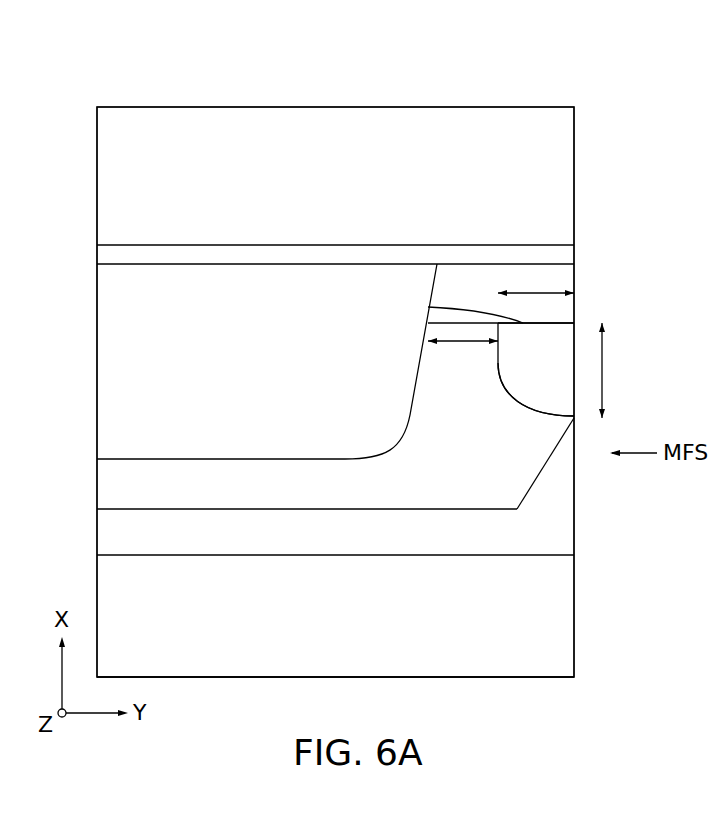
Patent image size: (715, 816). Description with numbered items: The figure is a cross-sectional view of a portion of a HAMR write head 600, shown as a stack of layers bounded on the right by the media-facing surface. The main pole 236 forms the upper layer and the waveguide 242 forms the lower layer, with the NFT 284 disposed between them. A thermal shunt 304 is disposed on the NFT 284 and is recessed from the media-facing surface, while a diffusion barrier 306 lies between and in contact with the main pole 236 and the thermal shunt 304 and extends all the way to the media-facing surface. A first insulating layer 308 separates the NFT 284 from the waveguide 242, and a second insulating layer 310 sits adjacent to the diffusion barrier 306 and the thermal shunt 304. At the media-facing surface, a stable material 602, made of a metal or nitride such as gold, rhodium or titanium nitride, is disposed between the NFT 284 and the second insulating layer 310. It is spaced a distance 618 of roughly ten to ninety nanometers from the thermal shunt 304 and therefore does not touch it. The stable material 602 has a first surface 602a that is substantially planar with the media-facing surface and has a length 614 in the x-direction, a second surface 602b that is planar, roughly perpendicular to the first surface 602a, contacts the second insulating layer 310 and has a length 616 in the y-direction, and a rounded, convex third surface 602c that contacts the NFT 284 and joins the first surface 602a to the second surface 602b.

The HAMR write head 600 is at (142, 72).
The main pole 236 is at (357, 218).
The diffusion barrier 306 is at (562, 255).
The thermal shunt 304 is at (239, 353).
The second insulating layer 310 is at (494, 293).
The stable material 602 is at (559, 373).
The first surface 602a is at (575, 335).
The second surface 602b is at (428, 307).
The third surface 602c is at (525, 404).
The length 616 is at (536, 282).
The distance 618 is at (463, 355).
The length 614 is at (625, 370).
The NFT 284 is at (434, 480).
The first insulating layer 308 is at (292, 543).
The waveguide 242 is at (319, 642).